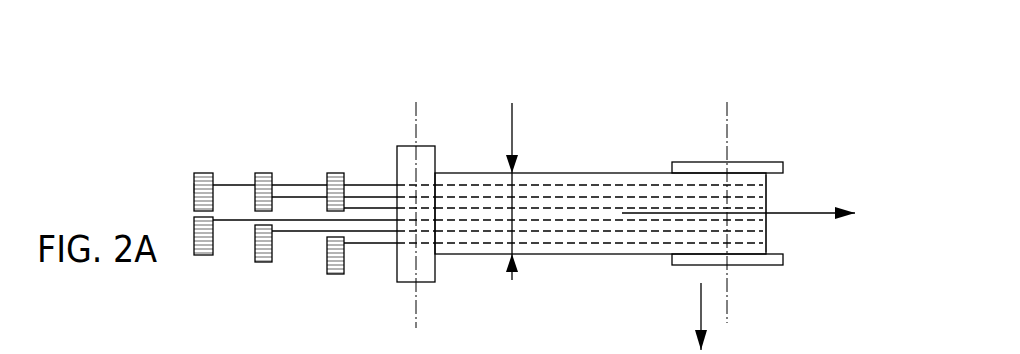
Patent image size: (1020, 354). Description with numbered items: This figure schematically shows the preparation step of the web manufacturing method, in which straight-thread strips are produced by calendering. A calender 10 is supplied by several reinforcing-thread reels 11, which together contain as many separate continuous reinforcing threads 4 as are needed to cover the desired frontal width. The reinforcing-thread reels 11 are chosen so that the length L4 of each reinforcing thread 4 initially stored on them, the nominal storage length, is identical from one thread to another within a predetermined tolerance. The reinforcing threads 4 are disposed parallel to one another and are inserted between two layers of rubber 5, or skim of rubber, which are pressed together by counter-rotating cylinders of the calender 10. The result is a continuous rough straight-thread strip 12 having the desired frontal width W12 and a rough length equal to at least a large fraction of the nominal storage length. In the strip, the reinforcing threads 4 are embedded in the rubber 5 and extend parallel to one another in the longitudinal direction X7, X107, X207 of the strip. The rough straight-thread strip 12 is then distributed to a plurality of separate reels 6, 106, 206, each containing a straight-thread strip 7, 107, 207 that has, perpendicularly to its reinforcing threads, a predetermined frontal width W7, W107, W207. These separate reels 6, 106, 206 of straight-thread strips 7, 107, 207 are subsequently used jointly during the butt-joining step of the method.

The continuous reinforcing threads 4 is at (235, 183).
The reinforcing-thread reels 11 is at (203, 173).
The length of reinforcing thread L4 is at (193, 188).
The calender 10 is at (395, 115).
The rubber 5 is at (460, 180).
The straight-thread strip 7 is at (600, 257).
The straight-thread strip 107 is at (600, 257).
The straight-thread strip 207 is at (598, 256).
The frontal width of rough straight-thread strip W12 is at (538, 181).
The frontal width W7 is at (538, 181).
The frontal width W107 is at (538, 181).
The frontal width W207 is at (538, 181).
The reel 6 is at (744, 212).
The reel 106 is at (744, 212).
The reel 206 is at (752, 160).
The longitudinal direction of strip X7 is at (762, 173).
The longitudinal direction of strip X107 is at (762, 173).
The longitudinal direction of strip X207 is at (813, 212).
The rough straight-thread strip 12 is at (768, 237).